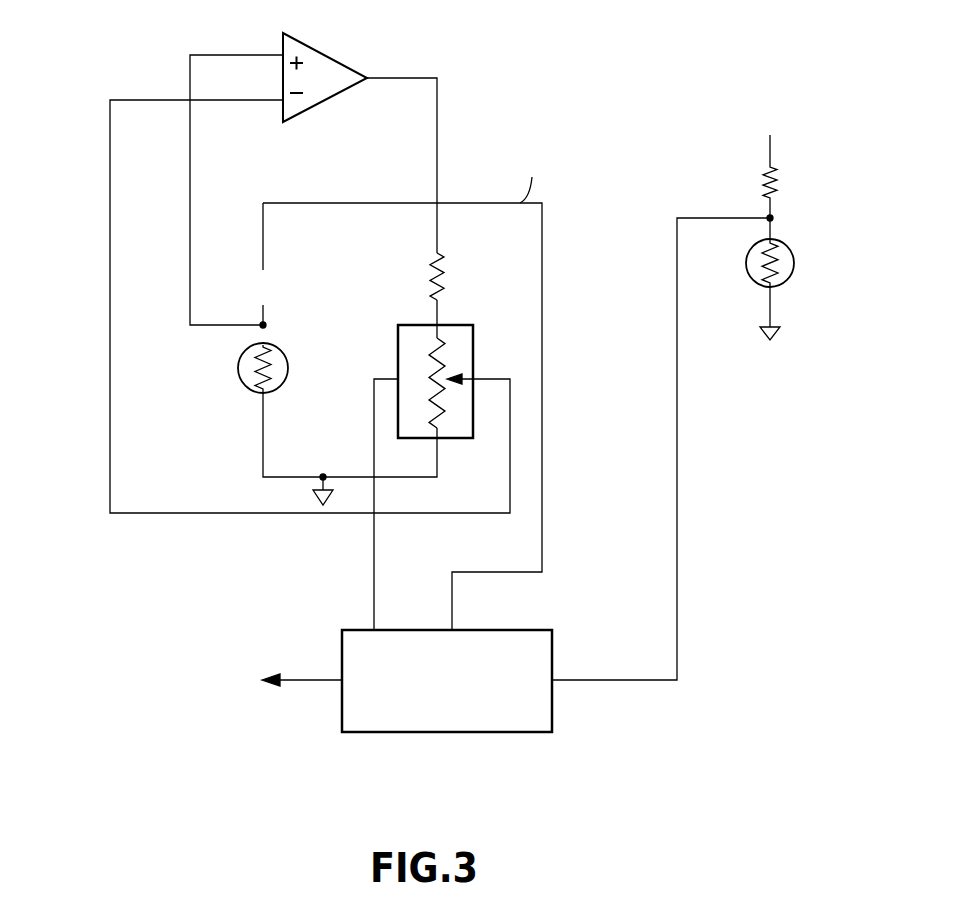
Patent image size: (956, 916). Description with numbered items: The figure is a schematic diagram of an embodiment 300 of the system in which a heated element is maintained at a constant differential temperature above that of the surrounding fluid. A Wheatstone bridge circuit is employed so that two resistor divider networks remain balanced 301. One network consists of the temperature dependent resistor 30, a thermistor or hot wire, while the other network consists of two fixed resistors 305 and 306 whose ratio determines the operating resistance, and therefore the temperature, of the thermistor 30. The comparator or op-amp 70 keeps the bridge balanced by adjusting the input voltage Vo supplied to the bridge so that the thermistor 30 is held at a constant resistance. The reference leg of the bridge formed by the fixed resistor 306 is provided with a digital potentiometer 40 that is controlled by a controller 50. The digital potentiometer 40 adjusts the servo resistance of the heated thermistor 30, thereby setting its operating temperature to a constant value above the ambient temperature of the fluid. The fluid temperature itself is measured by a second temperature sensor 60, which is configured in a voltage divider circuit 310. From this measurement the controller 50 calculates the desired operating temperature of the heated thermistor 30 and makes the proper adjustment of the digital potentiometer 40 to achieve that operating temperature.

The embodiment 300 is at (218, 768).
The balanced resistor divider networks 301 is at (77, 35).
The voltage divider circuit 310 is at (795, 125).
The comparator or op-amp 70 is at (330, 56).
The fixed resistor 305 is at (428, 289).
The fixed resistor 306 is at (430, 356).
The digital potentiometer 40 is at (478, 327).
The temperature dependent resistor 30 is at (246, 391).
The second temperature sensor 60 is at (752, 285).
The controller 50 is at (425, 720).